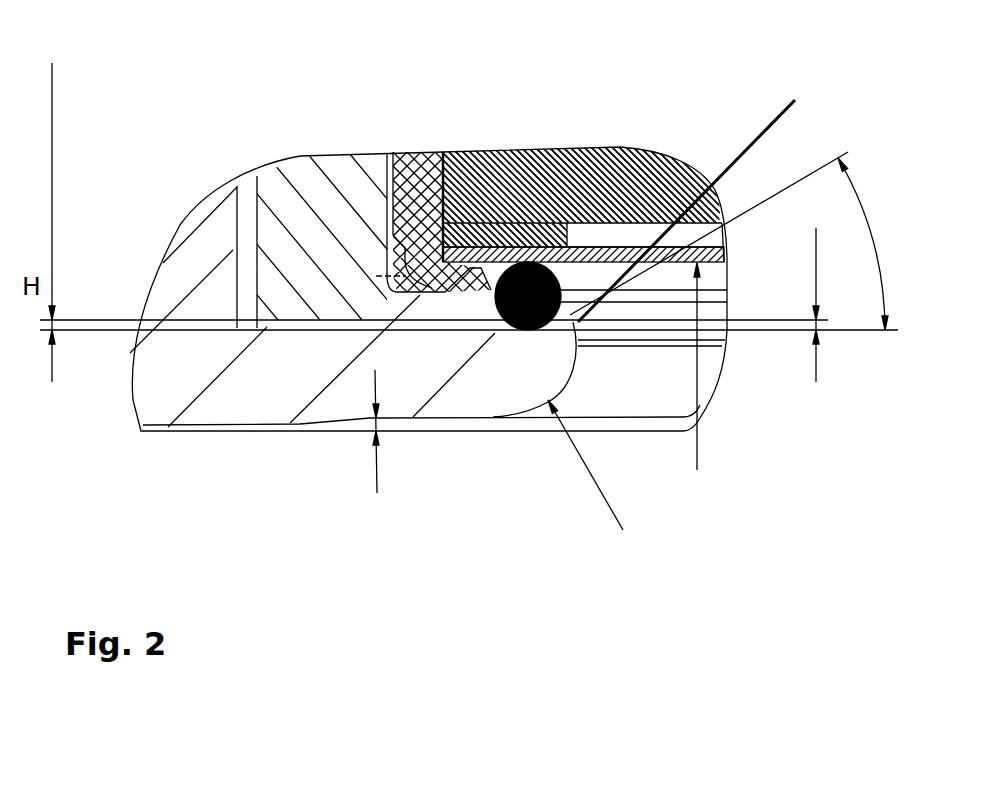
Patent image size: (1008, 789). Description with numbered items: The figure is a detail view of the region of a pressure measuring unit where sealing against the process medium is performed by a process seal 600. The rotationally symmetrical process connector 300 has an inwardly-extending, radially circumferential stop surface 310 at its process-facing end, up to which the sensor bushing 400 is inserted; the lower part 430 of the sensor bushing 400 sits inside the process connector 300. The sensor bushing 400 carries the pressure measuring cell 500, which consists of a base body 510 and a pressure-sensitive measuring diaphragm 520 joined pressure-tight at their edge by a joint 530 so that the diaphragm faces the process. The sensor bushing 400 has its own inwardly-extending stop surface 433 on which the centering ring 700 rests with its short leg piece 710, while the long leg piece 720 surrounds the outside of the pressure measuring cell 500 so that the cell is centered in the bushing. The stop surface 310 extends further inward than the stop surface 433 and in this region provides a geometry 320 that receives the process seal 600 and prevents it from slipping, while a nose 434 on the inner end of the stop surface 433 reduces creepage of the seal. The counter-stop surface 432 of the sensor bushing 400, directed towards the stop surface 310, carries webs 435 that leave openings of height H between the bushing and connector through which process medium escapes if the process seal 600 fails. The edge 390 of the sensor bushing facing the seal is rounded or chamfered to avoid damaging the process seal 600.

The process connector 300 is at (258, 385).
The stop surface 310 is at (412, 297).
The geometry for receiving the process seal 320 is at (537, 338).
The edge 390 is at (493, 326).
The sensor bushing 400 is at (312, 177).
The lower part 430 is at (289, 325).
The counter-stop surface 432 is at (293, 335).
The stop surface 433 is at (453, 293).
The nose 434 is at (488, 288).
The webs 435 is at (243, 327).
The pressure measuring cell 500 is at (580, 144).
The base body 510 is at (625, 162).
The measuring diaphragm 520 is at (620, 270).
The joint 530 is at (508, 240).
The process seal 600 is at (545, 257).
The centering ring 700 is at (442, 156).
The short leg piece 710 is at (453, 277).
The long leg piece 720 is at (412, 170).